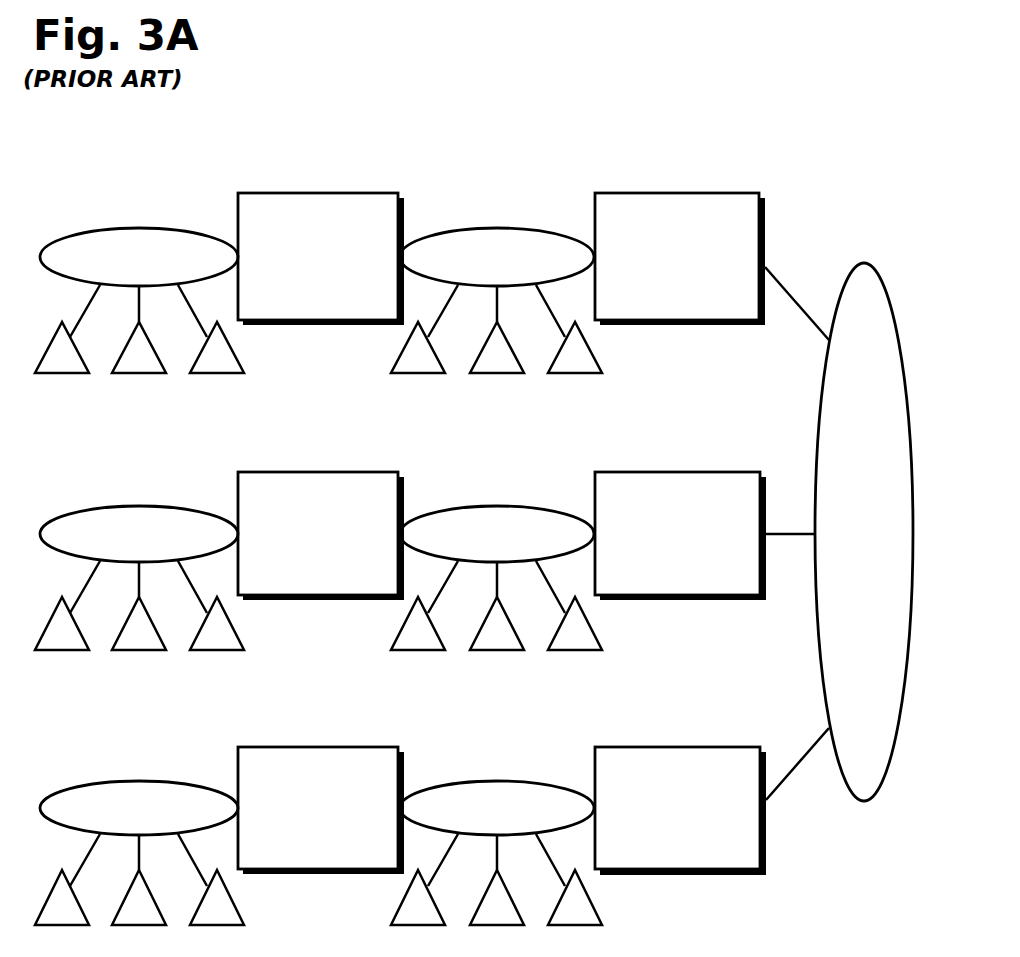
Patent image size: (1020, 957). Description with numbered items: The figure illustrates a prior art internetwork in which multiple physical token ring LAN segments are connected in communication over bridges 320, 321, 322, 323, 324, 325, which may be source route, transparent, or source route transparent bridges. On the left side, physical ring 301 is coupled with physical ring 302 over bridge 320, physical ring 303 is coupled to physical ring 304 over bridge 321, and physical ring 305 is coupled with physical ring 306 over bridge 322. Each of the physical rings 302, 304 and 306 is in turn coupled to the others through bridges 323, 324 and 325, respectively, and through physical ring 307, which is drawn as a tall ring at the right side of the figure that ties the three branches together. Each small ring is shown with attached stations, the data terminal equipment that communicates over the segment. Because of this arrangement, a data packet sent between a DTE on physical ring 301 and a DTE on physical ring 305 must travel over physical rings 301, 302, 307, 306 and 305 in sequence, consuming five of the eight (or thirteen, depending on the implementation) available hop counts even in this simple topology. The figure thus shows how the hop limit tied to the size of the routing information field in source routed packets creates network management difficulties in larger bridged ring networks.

The physical ring 301 is at (137, 228).
The physical ring 302 is at (490, 228).
The physical ring 303 is at (137, 506).
The physical ring 304 is at (490, 506).
The physical ring 305 is at (137, 781).
The physical ring 306 is at (490, 781).
The physical ring 307 is at (863, 263).
The bridge 320 is at (388, 309).
The bridge 321 is at (388, 586).
The bridge 322 is at (388, 860).
The bridge 323 is at (747, 309).
The bridge 324 is at (747, 586).
The bridge 325 is at (747, 862).